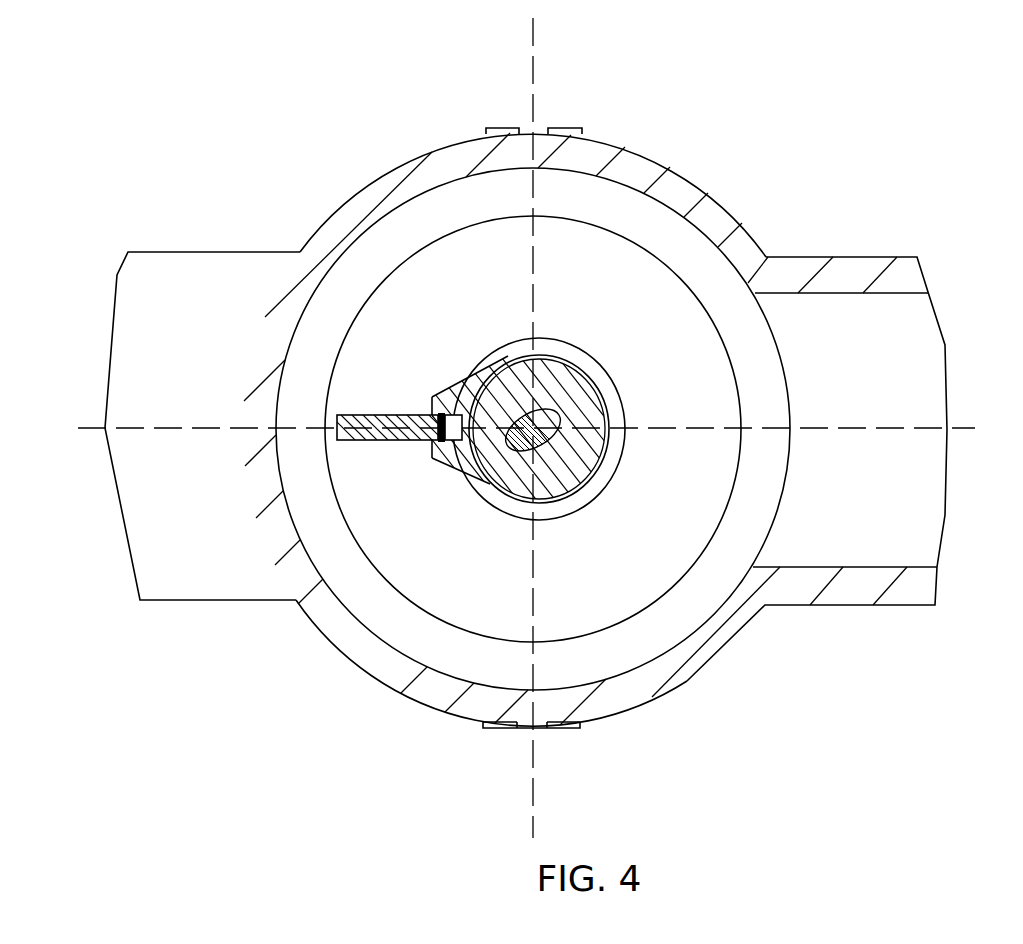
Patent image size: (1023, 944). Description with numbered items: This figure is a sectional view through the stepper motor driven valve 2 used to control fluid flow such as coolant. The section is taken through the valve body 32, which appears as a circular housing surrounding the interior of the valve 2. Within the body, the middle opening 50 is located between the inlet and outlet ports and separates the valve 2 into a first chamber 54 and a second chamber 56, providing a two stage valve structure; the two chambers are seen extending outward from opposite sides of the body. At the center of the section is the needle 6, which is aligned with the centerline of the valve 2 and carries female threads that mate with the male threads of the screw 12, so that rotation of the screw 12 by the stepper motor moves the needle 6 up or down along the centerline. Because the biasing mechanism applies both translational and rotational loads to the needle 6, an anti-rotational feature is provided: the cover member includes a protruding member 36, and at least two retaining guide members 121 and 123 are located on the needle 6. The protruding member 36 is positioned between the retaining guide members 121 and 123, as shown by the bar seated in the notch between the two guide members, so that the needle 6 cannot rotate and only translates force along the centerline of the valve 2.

The valve 2 is at (557, 402).
The valve body 32 is at (608, 163).
The middle opening 50 is at (538, 278).
The first chamber 54 is at (855, 408).
The second chamber 56 is at (133, 488).
The needle 6 is at (543, 366).
The screw 12 is at (560, 418).
The protruding member 36 is at (364, 417).
The retaining guide member 121 is at (432, 456).
The retaining guide member 123 is at (433, 397).